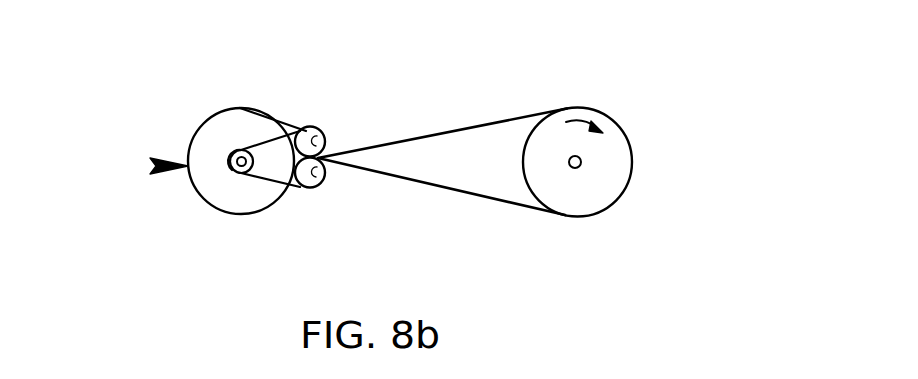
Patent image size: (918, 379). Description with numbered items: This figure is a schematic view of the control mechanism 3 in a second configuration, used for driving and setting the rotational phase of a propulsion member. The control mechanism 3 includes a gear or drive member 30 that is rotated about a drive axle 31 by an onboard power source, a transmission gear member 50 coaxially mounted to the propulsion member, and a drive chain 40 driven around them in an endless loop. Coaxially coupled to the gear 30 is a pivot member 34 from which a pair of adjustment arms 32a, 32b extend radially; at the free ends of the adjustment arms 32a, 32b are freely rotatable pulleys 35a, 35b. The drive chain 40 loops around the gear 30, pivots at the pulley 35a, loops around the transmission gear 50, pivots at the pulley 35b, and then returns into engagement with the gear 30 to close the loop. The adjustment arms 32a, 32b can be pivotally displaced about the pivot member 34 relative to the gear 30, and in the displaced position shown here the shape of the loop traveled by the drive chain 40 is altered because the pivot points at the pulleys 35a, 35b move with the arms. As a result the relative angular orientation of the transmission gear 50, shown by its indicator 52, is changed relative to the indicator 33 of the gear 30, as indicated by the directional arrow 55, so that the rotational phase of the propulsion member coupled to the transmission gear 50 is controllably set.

The control mechanism 3 is at (152, 164).
The drive member 30 is at (274, 137).
The drive axle 31 is at (237, 150).
The adjustment arm 32a is at (280, 146).
The adjustment arm 32b is at (278, 182).
The indicator 33 is at (205, 160).
The pivot member 34 is at (229, 174).
The pulley 35a is at (321, 130).
The pulley 35b is at (323, 186).
The drive chain 40 is at (443, 133).
The transmission gear member 50 is at (632, 150).
The indicator 52 is at (600, 143).
The directional arrow 55 is at (591, 111).